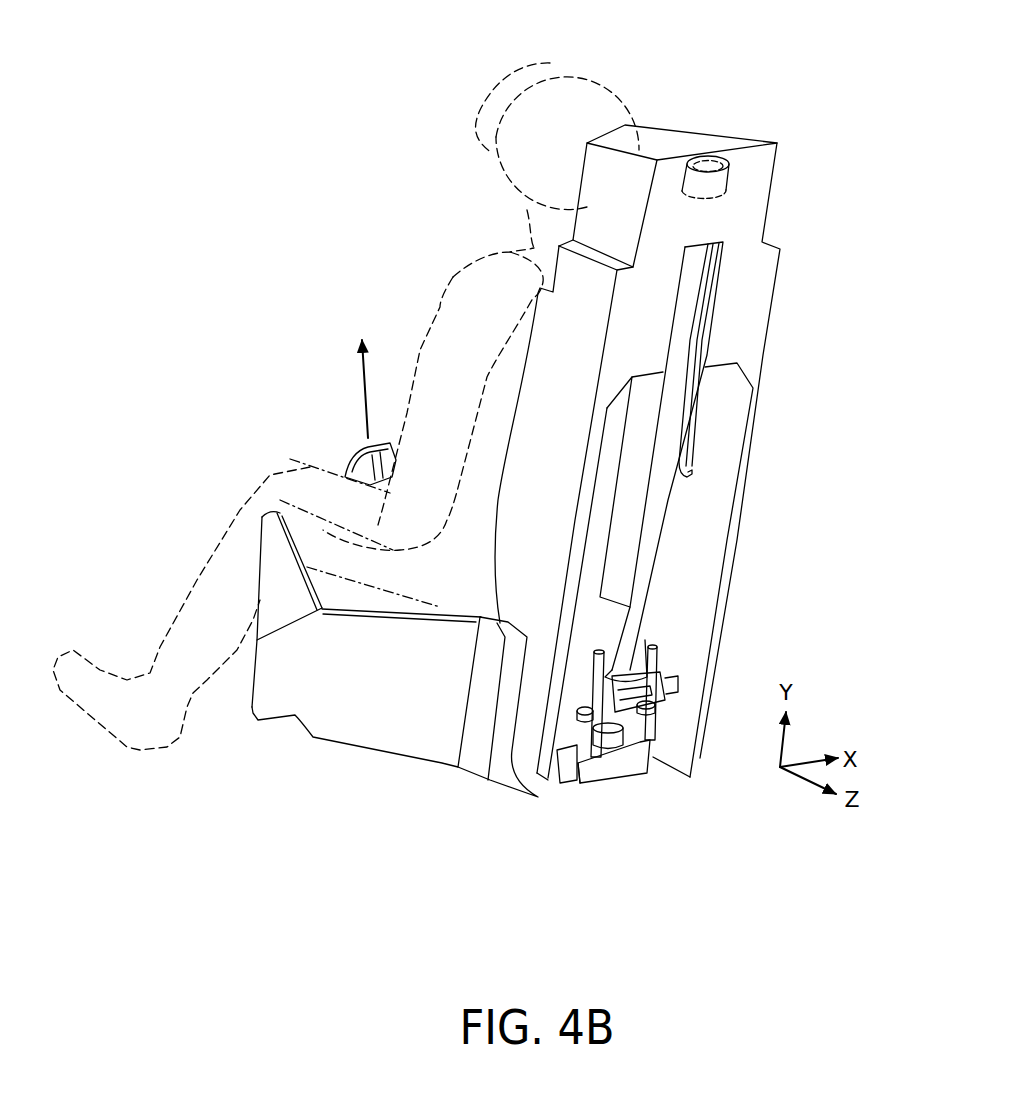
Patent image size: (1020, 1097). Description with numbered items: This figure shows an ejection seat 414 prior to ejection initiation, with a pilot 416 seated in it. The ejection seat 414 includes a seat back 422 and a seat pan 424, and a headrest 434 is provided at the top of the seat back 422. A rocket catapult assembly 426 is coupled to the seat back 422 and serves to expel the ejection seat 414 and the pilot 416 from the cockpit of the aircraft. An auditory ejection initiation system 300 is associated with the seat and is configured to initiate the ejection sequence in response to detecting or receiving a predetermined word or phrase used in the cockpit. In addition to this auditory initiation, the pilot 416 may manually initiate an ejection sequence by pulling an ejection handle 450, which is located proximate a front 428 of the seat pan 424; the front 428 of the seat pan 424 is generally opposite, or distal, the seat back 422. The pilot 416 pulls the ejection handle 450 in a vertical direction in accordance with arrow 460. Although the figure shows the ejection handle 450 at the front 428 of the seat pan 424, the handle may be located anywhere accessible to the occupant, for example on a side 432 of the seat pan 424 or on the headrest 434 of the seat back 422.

The pilot 416 is at (630, 75).
The ejection seat 414 is at (765, 108).
The headrest 434 is at (668, 137).
The auditory ejection initiation system 300 is at (730, 167).
The seat back 422 is at (621, 334).
The rocket catapult assembly 426 is at (700, 412).
The arrow 460 is at (357, 372).
The ejection handle 450 is at (335, 453).
The front of seat pan 428 is at (367, 597).
The side of seat pan 432 is at (356, 694).
The seat pan 424 is at (368, 760).